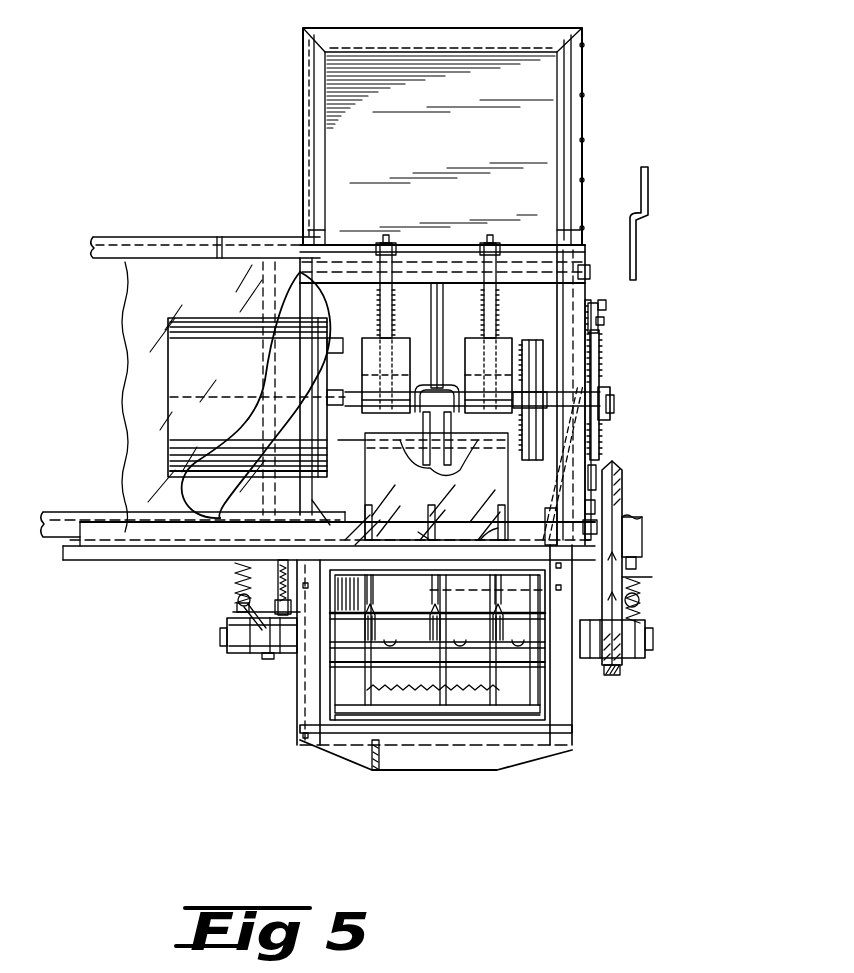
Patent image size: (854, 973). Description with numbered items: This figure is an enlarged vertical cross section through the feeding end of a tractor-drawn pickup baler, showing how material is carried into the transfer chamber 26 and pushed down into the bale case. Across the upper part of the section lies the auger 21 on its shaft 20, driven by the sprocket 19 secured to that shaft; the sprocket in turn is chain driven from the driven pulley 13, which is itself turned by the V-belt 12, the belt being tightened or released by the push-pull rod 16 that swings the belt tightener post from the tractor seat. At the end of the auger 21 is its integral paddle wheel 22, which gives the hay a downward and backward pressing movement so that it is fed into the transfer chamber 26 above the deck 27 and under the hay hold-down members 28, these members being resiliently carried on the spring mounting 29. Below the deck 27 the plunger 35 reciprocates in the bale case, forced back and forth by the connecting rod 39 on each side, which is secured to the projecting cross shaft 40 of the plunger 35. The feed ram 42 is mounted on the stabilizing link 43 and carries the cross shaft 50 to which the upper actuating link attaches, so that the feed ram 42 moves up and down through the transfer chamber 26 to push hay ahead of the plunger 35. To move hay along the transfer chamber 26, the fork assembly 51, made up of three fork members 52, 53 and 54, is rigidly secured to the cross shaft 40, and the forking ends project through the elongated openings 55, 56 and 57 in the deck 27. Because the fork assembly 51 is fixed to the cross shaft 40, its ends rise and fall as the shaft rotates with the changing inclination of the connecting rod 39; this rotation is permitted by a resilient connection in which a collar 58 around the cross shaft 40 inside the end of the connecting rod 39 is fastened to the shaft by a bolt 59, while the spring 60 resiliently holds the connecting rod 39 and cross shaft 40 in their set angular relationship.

The V-belt 12 is at (612, 675).
The driven pulley 13 is at (622, 494).
The push-pull rod 16 is at (648, 182).
The sprocket 19 is at (600, 440).
The shaft 20 is at (614, 401).
The auger 21 is at (204, 343).
The paddle wheel 22 is at (522, 462).
The transfer chamber 26 is at (351, 500).
The deck 27 is at (526, 541).
The hay hold-down members 28 is at (367, 345).
The spring mounting 29 is at (378, 291).
The plunger 35 is at (541, 690).
The connecting rod 39 is at (642, 533).
The cross shaft 40 is at (222, 636).
The feed ram 42 is at (399, 512).
The stabilizing link 43 is at (441, 310).
The cross shaft of feed ram 50 is at (348, 441).
The fork assembly 51 is at (430, 588).
The fork member 52 is at (374, 518).
The fork member 53 is at (432, 520).
The fork member 54 is at (468, 526).
The elongated opening 55 is at (365, 540).
The elongated opening 56 is at (419, 533).
The elongated opening 57 is at (481, 540).
The collar 58 is at (600, 665).
The bolt 59 is at (263, 657).
The spring 60 is at (642, 597).